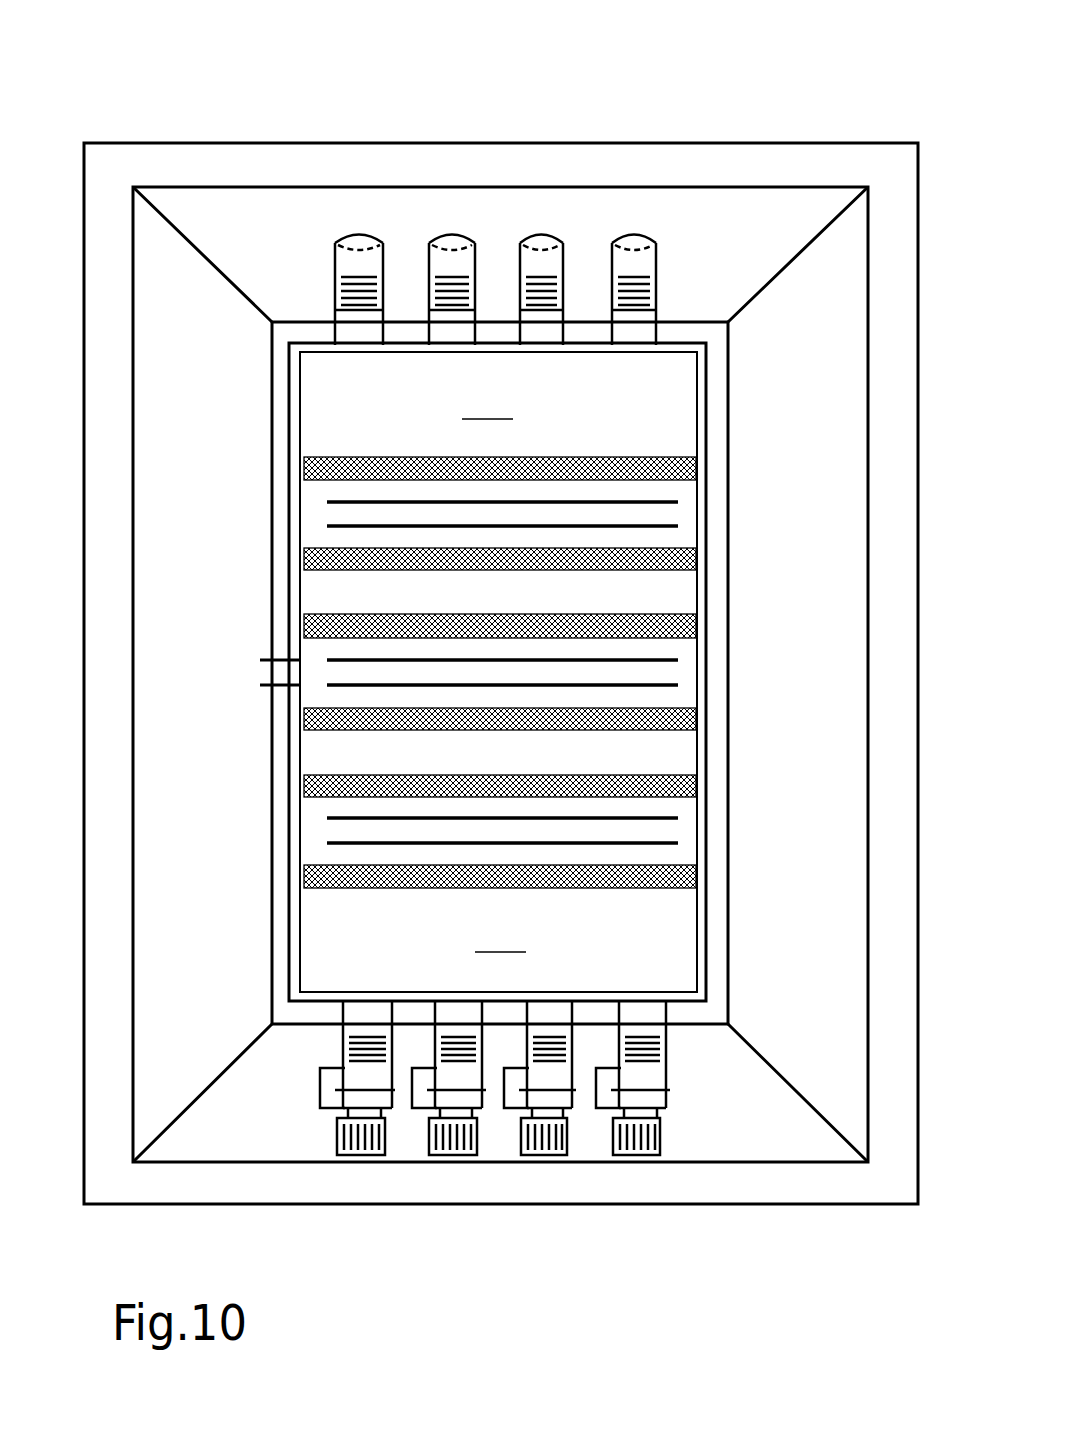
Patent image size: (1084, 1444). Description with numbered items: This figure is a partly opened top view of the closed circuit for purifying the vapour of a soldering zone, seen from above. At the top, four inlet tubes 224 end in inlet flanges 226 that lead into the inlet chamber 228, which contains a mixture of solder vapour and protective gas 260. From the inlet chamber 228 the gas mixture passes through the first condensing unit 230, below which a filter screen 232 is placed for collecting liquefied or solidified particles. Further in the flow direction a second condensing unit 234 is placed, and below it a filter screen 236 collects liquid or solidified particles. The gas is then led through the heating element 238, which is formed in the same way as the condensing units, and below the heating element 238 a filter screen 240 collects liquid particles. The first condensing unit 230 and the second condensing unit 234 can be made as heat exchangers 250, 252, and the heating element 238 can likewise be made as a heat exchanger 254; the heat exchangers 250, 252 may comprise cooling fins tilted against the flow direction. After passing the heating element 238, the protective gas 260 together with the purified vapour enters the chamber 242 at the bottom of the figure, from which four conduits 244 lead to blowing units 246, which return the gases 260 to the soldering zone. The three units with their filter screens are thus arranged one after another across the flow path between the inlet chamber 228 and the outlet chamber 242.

The inlet tube 224 is at (384, 276).
The inlet flange 226 is at (387, 332).
The inlet chamber 228 is at (650, 378).
The first condensing unit 230 is at (573, 462).
The filter screen 232 is at (697, 466).
The second condensing unit 234 is at (556, 619).
The filter screen 236 is at (693, 625).
The heating element 238 is at (578, 776).
The filter screen 240 is at (697, 782).
The chamber 242 is at (673, 938).
The conduit 244 is at (395, 1028).
The blowing unit 246 is at (382, 1098).
The heat exchanger 250 is at (588, 458).
The heat exchanger 252 is at (583, 614).
The heat exchanger 254 is at (583, 776).
The protective gas 260 is at (495, 672).